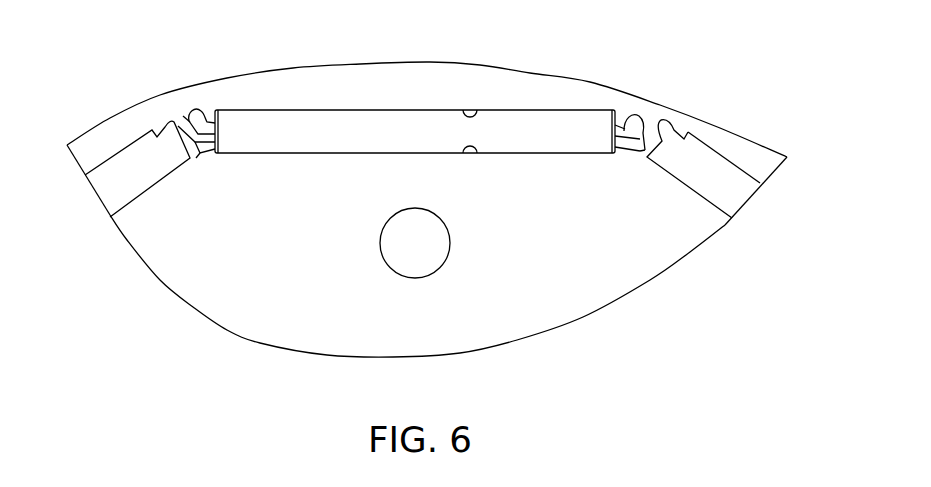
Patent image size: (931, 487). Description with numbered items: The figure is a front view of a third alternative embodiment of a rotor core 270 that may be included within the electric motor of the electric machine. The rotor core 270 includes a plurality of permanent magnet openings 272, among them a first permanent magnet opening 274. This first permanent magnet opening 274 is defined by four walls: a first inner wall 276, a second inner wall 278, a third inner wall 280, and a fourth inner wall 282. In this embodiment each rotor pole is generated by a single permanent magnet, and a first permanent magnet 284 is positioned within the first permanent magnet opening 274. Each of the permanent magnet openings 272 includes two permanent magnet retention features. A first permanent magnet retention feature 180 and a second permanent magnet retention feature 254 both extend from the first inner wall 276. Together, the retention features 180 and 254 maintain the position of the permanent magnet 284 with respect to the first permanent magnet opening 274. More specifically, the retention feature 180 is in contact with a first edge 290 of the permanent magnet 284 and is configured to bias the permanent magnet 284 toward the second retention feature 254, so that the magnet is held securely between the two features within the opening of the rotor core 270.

The permanent magnet openings 272 is at (203, 56).
The rotor core 270 is at (102, 126).
The retention feature 180 is at (187, 120).
The fourth inner wall 282 is at (200, 136).
The first edge 290 is at (196, 157).
The first permanent magnet opening 274 is at (316, 130).
The first inner wall 276 is at (478, 104).
The third inner wall 280 is at (478, 160).
The second inner wall 278 is at (660, 132).
The first permanent magnet 284 is at (634, 154).
The retention feature 254 is at (666, 120).